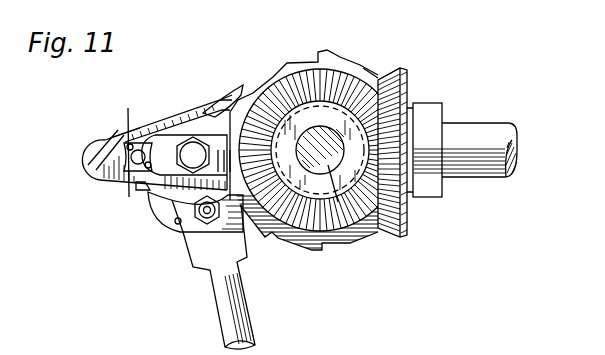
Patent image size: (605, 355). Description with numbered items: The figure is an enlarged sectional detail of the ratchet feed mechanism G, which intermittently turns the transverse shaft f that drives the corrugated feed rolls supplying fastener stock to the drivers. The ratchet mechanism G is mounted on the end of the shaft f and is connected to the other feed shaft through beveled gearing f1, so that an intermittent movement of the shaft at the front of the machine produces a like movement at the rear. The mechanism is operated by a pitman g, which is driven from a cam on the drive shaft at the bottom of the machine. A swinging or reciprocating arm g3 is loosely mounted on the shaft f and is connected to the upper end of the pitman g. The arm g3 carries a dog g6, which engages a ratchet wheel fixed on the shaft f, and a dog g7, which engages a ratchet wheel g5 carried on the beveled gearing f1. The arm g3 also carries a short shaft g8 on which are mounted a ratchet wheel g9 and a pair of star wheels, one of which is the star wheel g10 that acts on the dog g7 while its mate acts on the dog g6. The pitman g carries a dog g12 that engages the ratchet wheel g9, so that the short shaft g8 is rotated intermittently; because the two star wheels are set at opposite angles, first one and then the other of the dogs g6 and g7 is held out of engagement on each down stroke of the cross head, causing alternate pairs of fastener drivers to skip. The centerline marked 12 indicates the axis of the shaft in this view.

The axis line of shaft 12 is at (522, 147).
The ratchet mechanism G is at (304, 150).
The transverse shaft f is at (345, 237).
The beveled gear f1 is at (381, 228).
The pitman g is at (222, 288).
The swinging arm g3 is at (98, 176).
The ratchet wheel g5 is at (368, 73).
The dog g6 is at (222, 100).
The dog g7 is at (205, 118).
The short shaft g8 is at (120, 151).
The ratchet wheel g9 is at (118, 177).
The star wheel g10 is at (171, 188).
The dog g12 is at (176, 212).